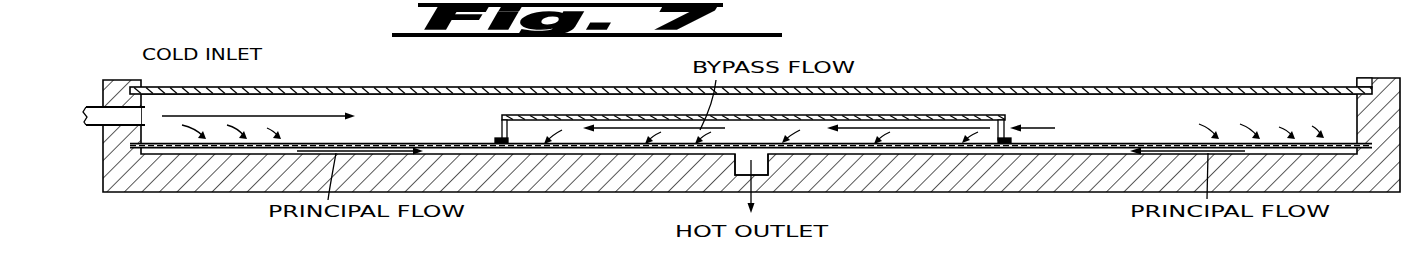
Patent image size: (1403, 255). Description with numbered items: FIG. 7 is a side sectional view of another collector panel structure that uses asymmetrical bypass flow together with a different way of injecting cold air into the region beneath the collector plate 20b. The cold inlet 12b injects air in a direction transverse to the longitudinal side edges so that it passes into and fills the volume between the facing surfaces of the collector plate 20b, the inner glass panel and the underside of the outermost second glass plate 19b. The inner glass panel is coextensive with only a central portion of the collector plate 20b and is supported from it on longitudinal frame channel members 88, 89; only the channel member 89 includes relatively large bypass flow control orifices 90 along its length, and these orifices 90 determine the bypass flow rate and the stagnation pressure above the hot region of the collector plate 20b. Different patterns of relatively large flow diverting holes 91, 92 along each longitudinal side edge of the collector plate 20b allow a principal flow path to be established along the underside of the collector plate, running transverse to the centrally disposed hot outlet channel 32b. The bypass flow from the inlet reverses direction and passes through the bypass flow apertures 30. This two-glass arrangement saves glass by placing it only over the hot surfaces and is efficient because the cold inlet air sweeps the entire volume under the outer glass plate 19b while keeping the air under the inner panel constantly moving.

The cold inlet 12b is at (92, 110).
The second glass plate 19b is at (1126, 88).
The collector plate 20b is at (1178, 143).
The bypass flow apertures 30 is at (628, 148).
The hot outlet channel 32b is at (760, 163).
The longitudinal frame channel member 88 is at (498, 130).
The longitudinal frame channel member 89 is at (1008, 143).
The bypass flow control orifices 90 is at (998, 124).
The flow diverting holes 91 is at (243, 149).
The flow diverting holes 92 is at (1292, 143).